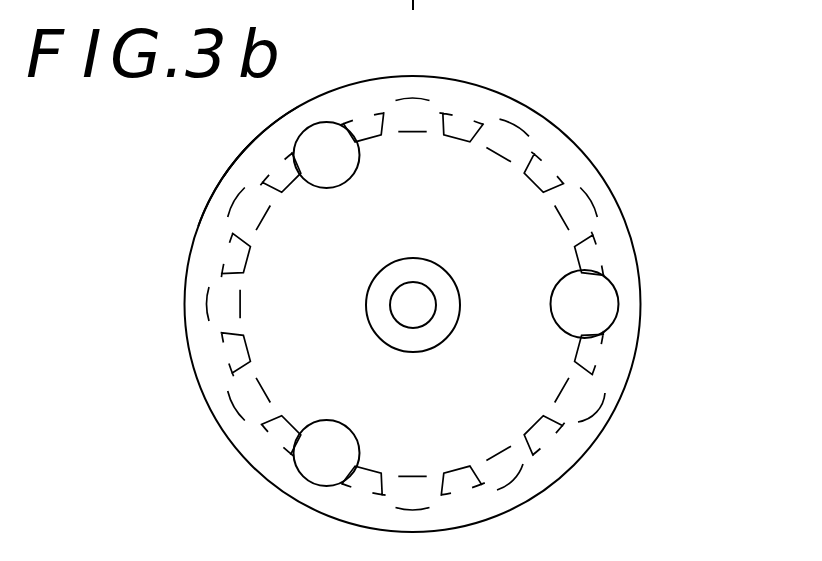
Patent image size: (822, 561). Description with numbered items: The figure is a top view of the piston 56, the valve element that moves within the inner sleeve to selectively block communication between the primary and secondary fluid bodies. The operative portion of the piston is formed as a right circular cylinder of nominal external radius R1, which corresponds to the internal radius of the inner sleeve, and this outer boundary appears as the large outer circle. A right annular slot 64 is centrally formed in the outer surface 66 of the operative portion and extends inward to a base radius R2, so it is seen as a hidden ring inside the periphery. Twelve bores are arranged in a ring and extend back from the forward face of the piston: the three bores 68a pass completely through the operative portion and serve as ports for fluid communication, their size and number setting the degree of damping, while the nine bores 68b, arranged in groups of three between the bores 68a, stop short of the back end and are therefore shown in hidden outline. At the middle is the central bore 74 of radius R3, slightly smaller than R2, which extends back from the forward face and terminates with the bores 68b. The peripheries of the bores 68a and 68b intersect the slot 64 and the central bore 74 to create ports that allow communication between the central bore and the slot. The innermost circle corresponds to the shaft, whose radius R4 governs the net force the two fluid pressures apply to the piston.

The piston 56 is at (640, 138).
The right annular slot 64 is at (225, 248).
The outer surface 66 is at (232, 167).
The bores 68a is at (617, 316).
The bores 68b is at (603, 396).
The central bore 74 is at (262, 145).
The nominal external radius R1 is at (255, 341).
The base radius R2 is at (413, 305).
The radius of the central bore R3 is at (340, 229).
The radius of the shaft R4 is at (413, 305).